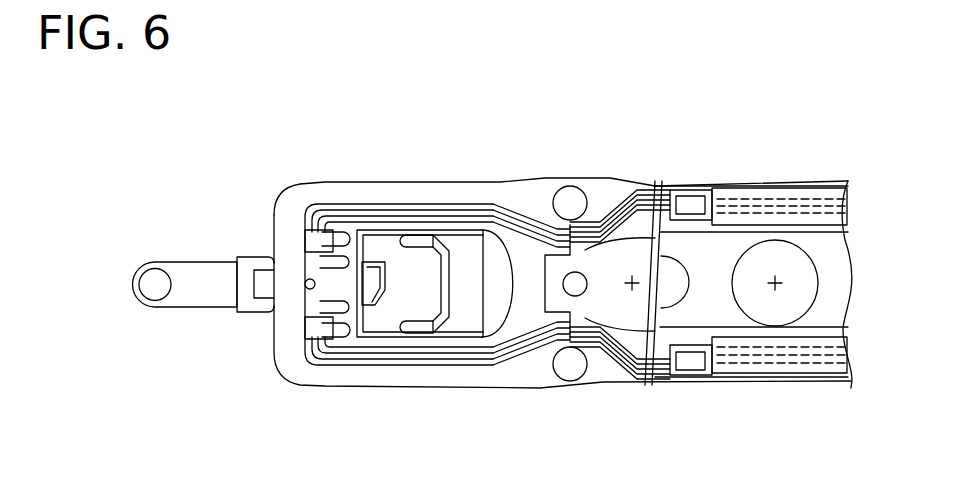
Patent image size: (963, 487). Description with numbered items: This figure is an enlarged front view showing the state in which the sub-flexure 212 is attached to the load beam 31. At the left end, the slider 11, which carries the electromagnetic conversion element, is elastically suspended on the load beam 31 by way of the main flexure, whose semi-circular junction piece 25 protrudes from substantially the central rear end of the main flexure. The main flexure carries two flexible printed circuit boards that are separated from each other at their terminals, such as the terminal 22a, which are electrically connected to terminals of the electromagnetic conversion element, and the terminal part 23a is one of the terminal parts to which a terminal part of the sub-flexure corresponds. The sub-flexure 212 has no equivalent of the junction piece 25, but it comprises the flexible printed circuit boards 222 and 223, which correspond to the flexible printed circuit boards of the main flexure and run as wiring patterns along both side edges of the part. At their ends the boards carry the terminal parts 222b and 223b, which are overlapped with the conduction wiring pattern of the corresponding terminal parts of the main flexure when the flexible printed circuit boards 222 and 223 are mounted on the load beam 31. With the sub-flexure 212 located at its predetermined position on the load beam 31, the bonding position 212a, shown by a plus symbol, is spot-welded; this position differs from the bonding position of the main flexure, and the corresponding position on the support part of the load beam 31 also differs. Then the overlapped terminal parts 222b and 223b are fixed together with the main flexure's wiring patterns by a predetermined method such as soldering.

The slider 11 is at (385, 253).
The sub-flexure 212 is at (428, 154).
The bonding position 212a is at (603, 305).
The flexible printed circuit board 222 is at (513, 202).
The terminal part 222b is at (690, 198).
The flexible printed circuit board 223 is at (432, 358).
The terminal part 223b is at (653, 378).
The junction piece 25 is at (670, 285).
The load beam 31 is at (720, 262).
The terminal 22a is at (817, 200).
The terminal part 23a is at (812, 362).